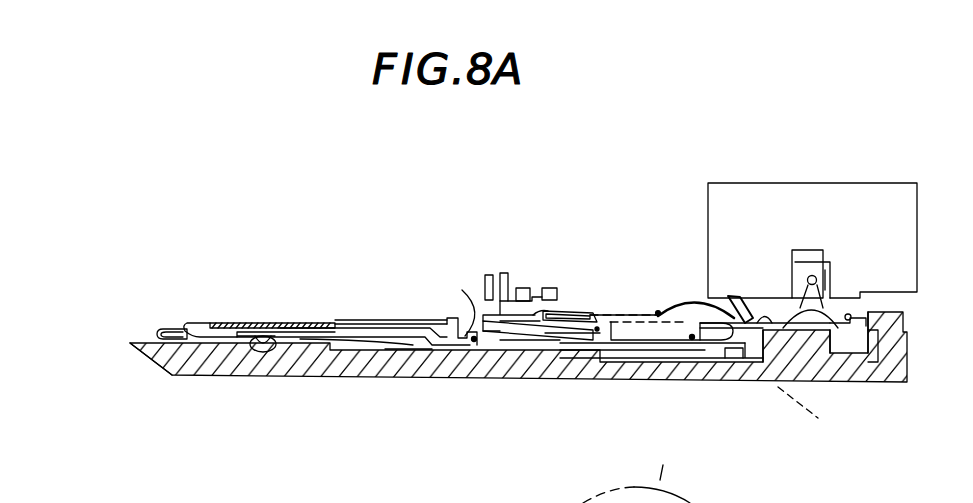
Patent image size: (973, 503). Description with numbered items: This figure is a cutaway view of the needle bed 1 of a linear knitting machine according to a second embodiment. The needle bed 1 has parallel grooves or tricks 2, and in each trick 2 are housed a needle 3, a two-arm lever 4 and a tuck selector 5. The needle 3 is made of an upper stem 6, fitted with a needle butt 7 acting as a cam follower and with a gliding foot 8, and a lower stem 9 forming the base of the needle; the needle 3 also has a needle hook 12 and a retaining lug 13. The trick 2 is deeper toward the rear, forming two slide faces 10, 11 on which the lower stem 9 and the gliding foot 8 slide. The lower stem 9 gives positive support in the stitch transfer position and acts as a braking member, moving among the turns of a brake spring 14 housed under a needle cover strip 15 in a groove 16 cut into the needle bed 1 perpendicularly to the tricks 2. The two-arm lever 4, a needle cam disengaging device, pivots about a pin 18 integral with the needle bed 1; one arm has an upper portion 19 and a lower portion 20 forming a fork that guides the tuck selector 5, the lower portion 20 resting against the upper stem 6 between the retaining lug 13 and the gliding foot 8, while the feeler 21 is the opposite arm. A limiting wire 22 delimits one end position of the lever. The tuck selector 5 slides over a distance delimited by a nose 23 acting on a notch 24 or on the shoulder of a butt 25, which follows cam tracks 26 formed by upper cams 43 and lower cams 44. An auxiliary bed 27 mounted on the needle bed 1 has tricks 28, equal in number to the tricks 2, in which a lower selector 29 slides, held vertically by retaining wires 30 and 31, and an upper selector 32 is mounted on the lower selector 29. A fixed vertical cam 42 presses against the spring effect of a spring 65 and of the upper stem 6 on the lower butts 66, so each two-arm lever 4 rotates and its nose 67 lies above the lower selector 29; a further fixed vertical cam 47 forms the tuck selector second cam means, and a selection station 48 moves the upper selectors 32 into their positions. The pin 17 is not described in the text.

The needle bed 1 is at (162, 352).
The tricks 2 is at (187, 328).
The needle 3 is at (247, 340).
The two-arm lever 4 is at (622, 332).
The tuck selector 5 is at (503, 322).
The upper stem 6 is at (328, 332).
The needle butt 7 is at (447, 318).
The gliding foot 8 is at (737, 360).
The lower stem 9 is at (385, 350).
The slide face 10 is at (132, 342).
The slide face 11 is at (403, 350).
The needle hook 12 is at (160, 329).
The retaining lug 13 is at (466, 300).
The brake spring 14 is at (272, 346).
The needle cover strip 15 is at (229, 323).
The groove 16 is at (258, 352).
The pin 17 is at (476, 342).
The pin 18 is at (592, 327).
The upper portion 19 is at (575, 313).
The lower portion 20 is at (490, 332).
The feeler 21 is at (688, 305).
The limiting wire 22 is at (692, 339).
The nose 23 is at (512, 332).
The notch 24 is at (555, 333).
The butt 25 is at (557, 302).
The cam tracks 26 is at (540, 290).
The auxiliary bed 27 is at (870, 360).
The tricks 28 is at (767, 322).
The lower selector 29 is at (810, 290).
The retaining wire 30 is at (750, 318).
The retaining wire 31 is at (851, 315).
The upper selector 32 is at (803, 265).
The fixed vertical cam 42 is at (504, 273).
The upper cams 43 is at (521, 288).
The lower cams 44 is at (553, 288).
The fixed vertical cam 47 is at (482, 300).
The selection station 48 is at (798, 214).
The spring 65 is at (657, 312).
The lower butts 66 is at (498, 313).
The nose 67 is at (702, 327).